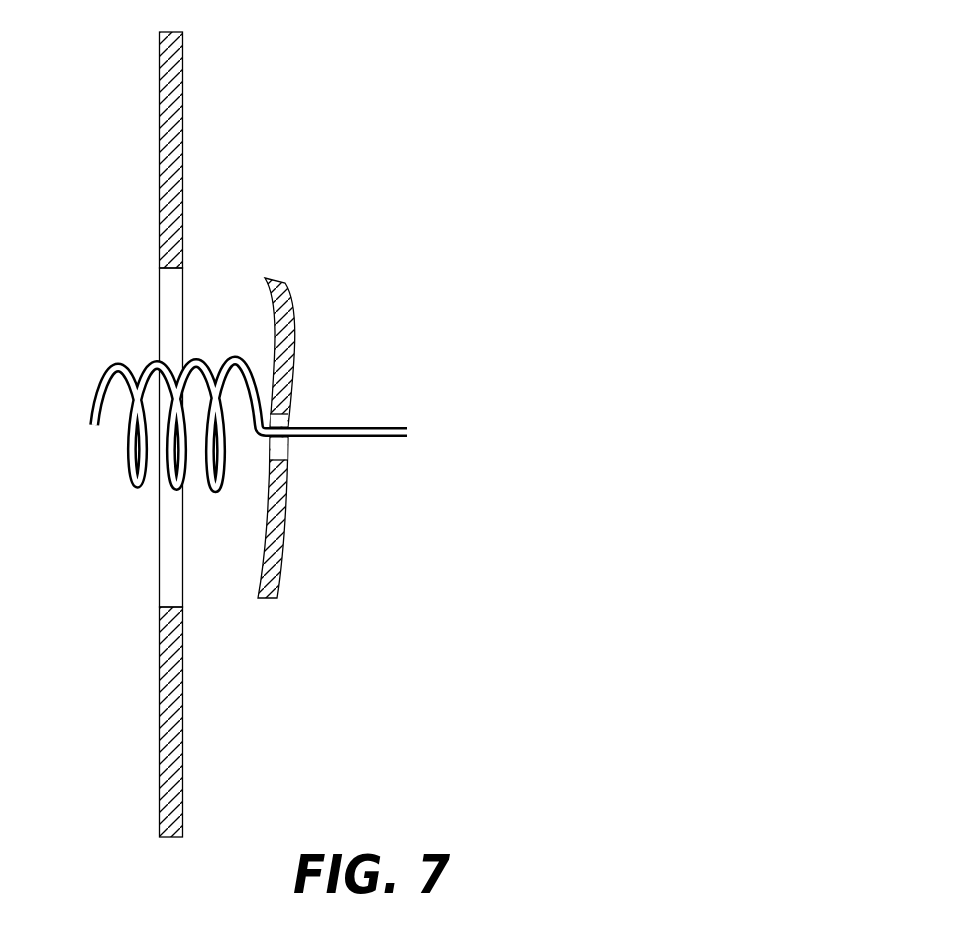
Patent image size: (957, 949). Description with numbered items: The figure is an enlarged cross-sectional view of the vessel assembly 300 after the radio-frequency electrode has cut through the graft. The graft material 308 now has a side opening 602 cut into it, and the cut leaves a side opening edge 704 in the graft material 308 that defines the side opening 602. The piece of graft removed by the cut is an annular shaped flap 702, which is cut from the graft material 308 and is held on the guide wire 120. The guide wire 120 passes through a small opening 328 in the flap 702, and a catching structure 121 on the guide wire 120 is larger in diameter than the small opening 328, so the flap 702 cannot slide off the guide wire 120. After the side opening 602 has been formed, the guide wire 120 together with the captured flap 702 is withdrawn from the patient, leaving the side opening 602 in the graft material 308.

The vessel assembly 300 is at (516, 118).
The graft material 308 is at (182, 173).
The side opening 602 is at (148, 308).
The side opening edge 704 is at (160, 603).
The catching structure 121 is at (140, 487).
The guide wire 120 is at (370, 428).
The flap 702 is at (292, 304).
The small opening 328 is at (291, 417).